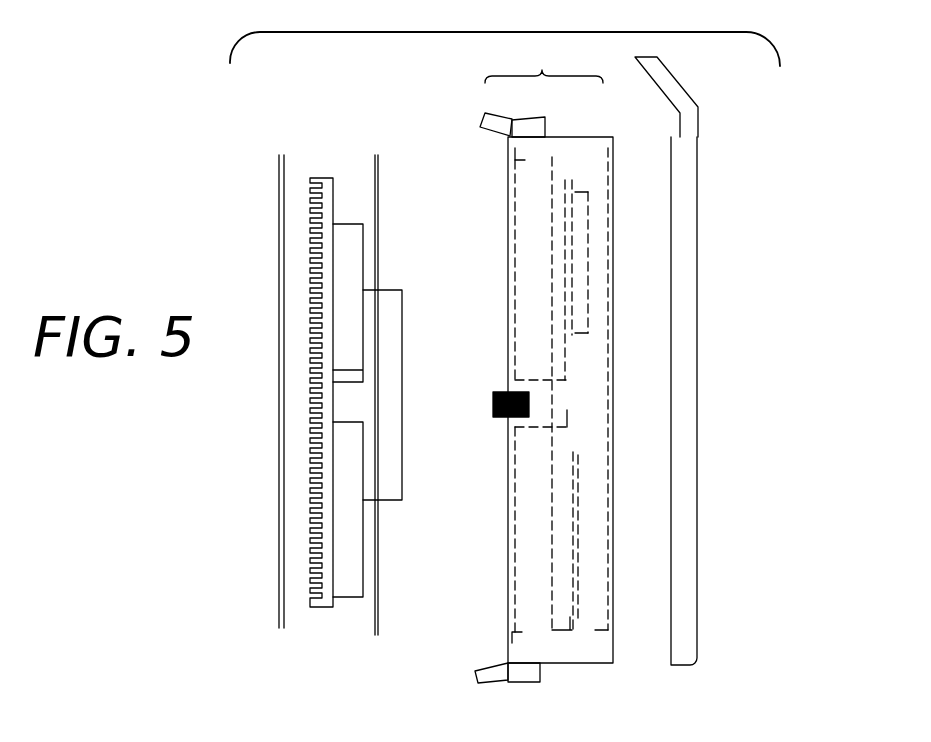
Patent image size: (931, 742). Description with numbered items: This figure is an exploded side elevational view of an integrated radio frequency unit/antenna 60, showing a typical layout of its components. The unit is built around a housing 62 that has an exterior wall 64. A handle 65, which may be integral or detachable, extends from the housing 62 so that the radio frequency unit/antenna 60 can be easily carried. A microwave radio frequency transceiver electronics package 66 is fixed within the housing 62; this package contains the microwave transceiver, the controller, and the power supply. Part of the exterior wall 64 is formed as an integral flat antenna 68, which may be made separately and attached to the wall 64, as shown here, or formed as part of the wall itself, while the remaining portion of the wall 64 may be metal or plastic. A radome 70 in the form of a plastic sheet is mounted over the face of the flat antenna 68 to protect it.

The integrated radio frequency unit/antenna 60 is at (306, 114).
The housing 62 is at (746, 168).
The exterior wall 64 is at (563, 136).
The handle 65 is at (680, 88).
The microwave radio frequency transceiver electronics package 66 is at (398, 271).
The flat antenna 68 is at (323, 177).
The radome 70 is at (279, 184).